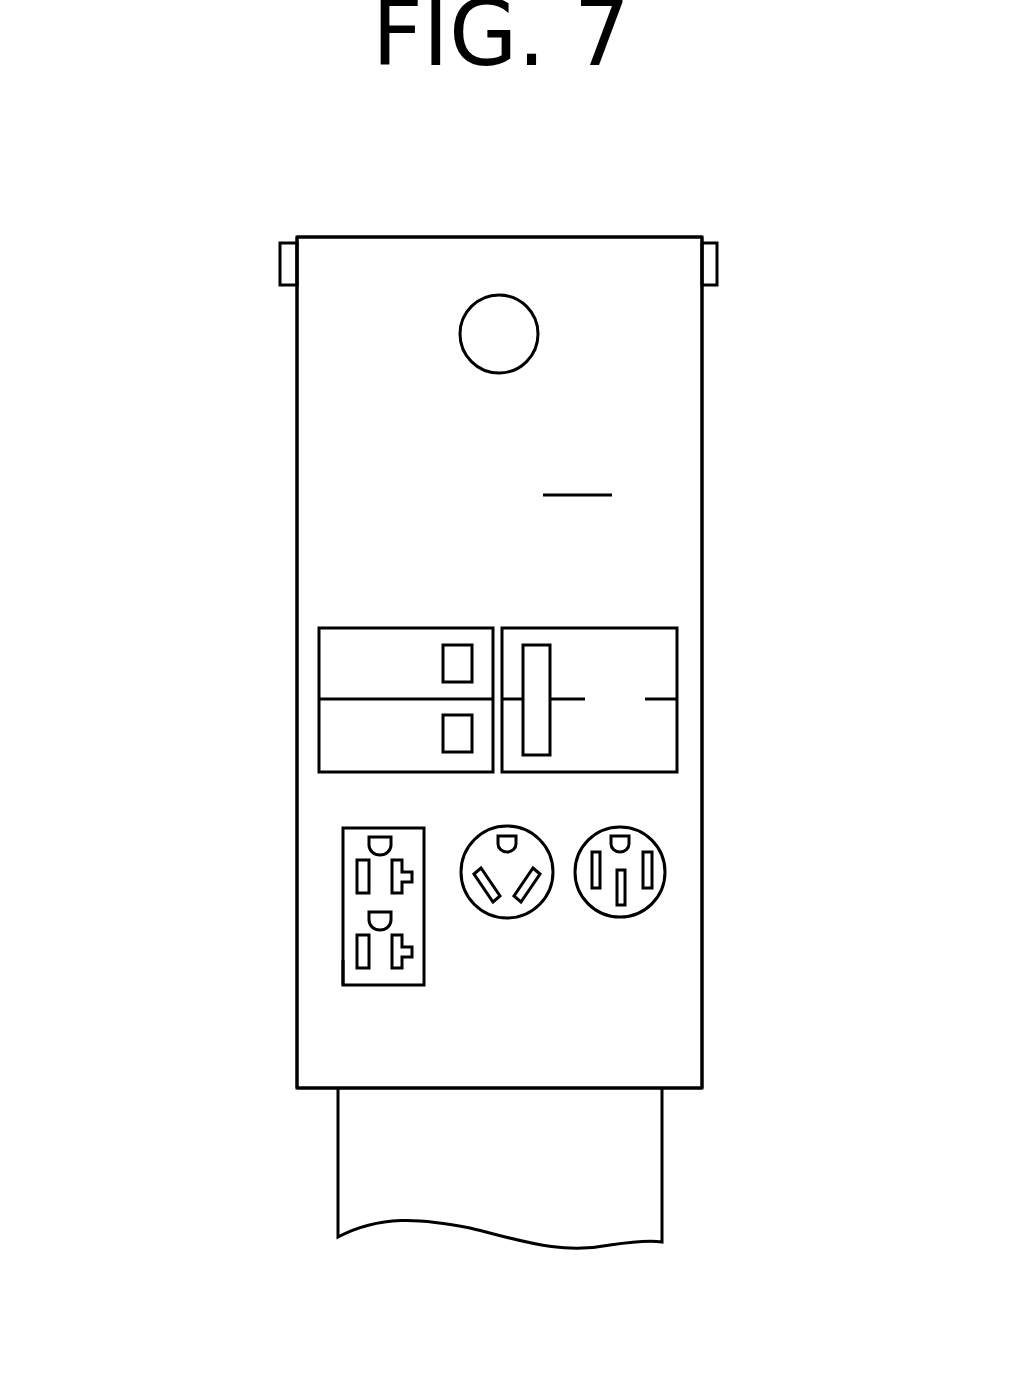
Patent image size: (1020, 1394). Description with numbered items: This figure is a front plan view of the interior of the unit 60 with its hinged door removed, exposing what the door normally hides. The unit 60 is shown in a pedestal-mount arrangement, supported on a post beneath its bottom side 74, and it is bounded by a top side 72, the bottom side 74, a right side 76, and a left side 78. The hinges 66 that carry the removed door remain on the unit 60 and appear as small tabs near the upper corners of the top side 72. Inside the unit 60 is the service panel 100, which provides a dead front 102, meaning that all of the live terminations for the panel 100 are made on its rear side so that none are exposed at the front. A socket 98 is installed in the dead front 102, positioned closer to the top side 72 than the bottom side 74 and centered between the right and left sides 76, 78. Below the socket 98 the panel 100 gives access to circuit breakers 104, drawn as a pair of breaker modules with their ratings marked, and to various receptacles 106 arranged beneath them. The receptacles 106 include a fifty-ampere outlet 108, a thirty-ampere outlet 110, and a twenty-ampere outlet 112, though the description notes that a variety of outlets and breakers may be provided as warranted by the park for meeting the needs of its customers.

The unit 60 is at (225, 393).
The hinges 66 is at (280, 263).
The top side 72 is at (423, 237).
The bottom side 74 is at (685, 1090).
The right side 76 is at (697, 515).
The left side 78 is at (296, 741).
The socket 98 is at (513, 328).
The service panel 100 is at (358, 535).
The dead front 102 is at (577, 462).
The circuit breakers 104 is at (355, 661).
The receptacles 106 is at (343, 907).
The 50 Amp outlet 108 is at (665, 872).
The 30 Amp outlet 110 is at (530, 915).
The 20 Amp outlet 112 is at (346, 969).